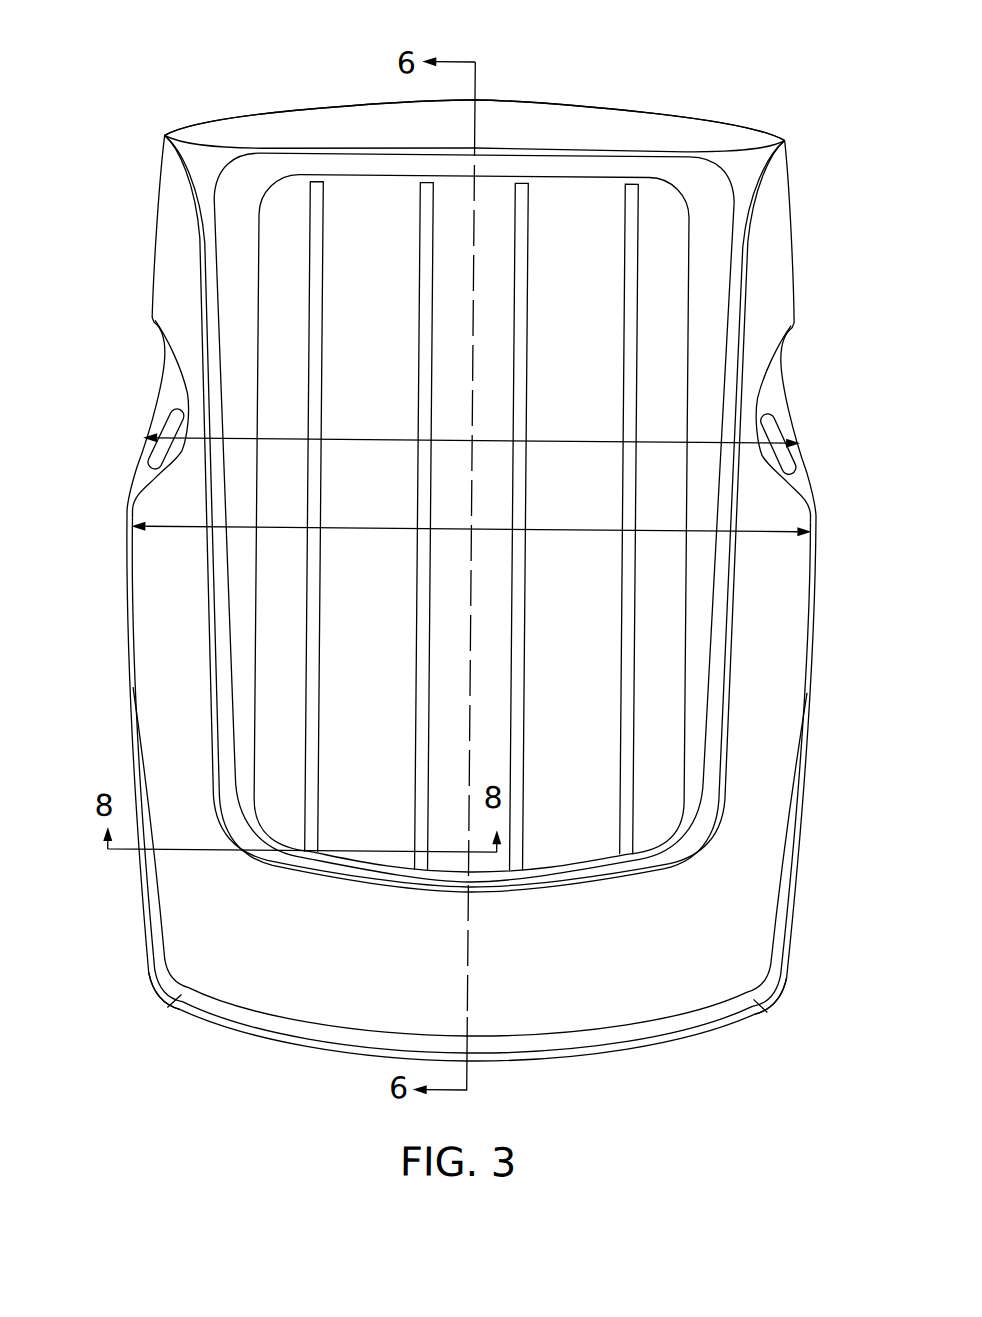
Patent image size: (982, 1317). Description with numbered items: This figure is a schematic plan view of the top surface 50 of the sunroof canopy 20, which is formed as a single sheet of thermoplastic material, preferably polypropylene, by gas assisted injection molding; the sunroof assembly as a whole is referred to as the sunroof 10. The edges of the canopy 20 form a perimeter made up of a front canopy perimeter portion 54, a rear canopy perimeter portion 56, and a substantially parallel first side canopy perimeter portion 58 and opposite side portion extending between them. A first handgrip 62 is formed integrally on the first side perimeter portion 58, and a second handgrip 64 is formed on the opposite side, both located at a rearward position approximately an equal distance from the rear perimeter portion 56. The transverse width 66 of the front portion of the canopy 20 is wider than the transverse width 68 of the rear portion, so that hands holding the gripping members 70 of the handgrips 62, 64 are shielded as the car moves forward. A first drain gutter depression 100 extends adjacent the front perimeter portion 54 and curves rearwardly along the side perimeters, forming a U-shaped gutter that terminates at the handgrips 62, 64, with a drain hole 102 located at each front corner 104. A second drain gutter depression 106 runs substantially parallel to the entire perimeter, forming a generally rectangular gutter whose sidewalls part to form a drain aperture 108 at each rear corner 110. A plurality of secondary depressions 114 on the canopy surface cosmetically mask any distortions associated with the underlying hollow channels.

The container 10 is at (733, 291).
The canopy 20 is at (705, 108).
The top surface 50 is at (580, 258).
The front canopy perimeter portion 54 is at (650, 1046).
The rear canopy perimeter portion 56 is at (589, 104).
The first side canopy perimeter portion 58 is at (127, 582).
The first handgrip 62 is at (162, 388).
The second handgrip 64 is at (783, 397).
The transverse width of front portion 66 is at (570, 534).
The transverse width of rear portion 68 is at (570, 446).
The gripping member 70 is at (157, 417).
The first drain gutter depression 100 is at (148, 793).
The drain hole 102 is at (172, 1012).
The front corner 104 is at (143, 1008).
The second drain gutter depression 106 is at (212, 291).
The drain aperture 108 is at (161, 137).
The rear corner 110 is at (205, 108).
The secondary depressions 114 is at (428, 297).